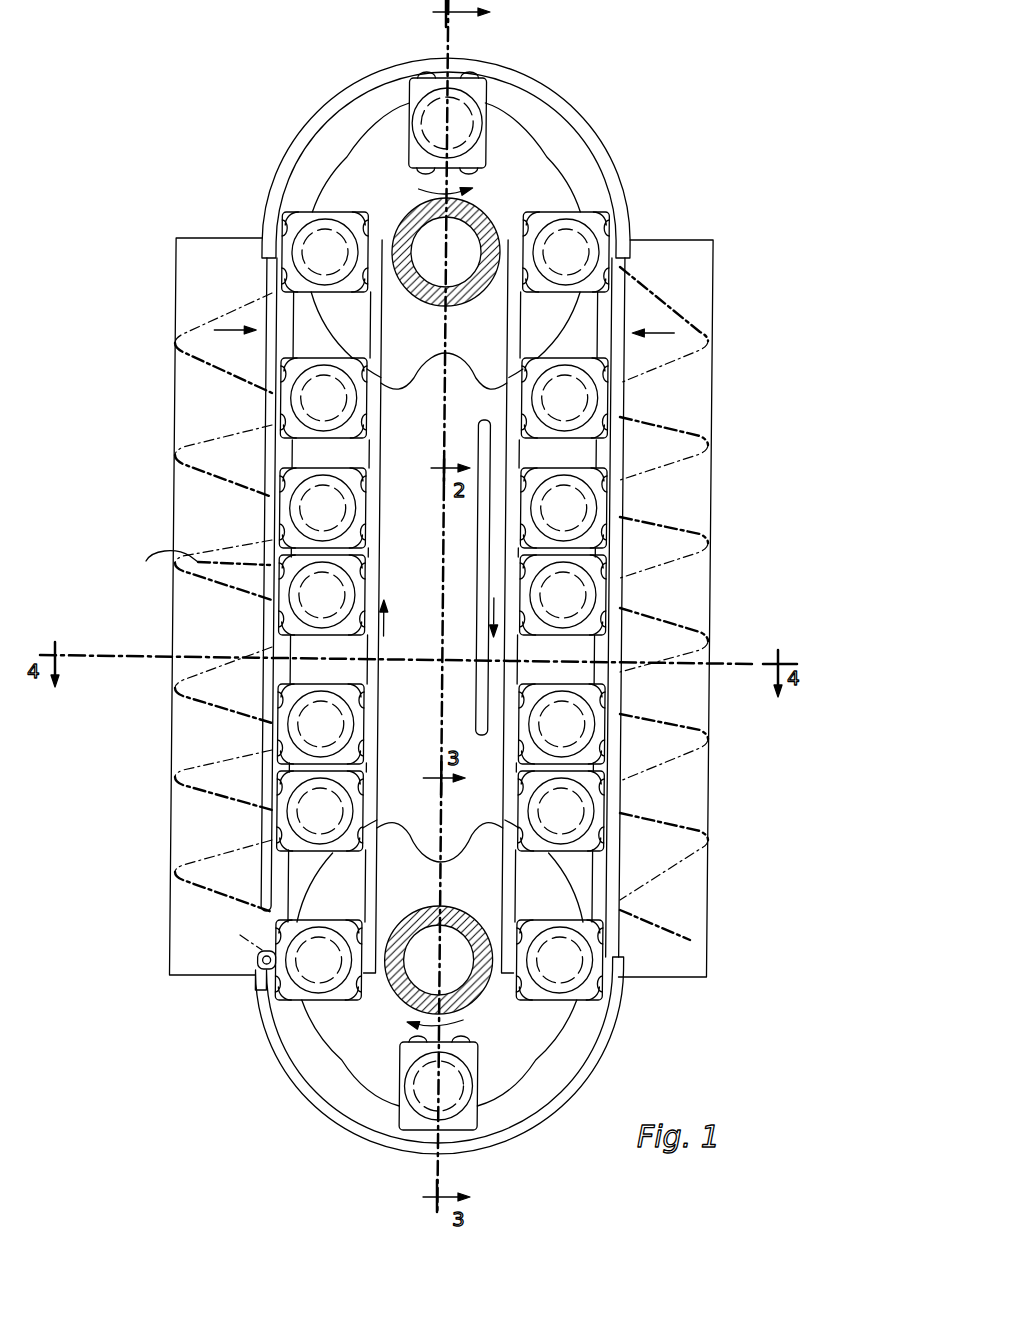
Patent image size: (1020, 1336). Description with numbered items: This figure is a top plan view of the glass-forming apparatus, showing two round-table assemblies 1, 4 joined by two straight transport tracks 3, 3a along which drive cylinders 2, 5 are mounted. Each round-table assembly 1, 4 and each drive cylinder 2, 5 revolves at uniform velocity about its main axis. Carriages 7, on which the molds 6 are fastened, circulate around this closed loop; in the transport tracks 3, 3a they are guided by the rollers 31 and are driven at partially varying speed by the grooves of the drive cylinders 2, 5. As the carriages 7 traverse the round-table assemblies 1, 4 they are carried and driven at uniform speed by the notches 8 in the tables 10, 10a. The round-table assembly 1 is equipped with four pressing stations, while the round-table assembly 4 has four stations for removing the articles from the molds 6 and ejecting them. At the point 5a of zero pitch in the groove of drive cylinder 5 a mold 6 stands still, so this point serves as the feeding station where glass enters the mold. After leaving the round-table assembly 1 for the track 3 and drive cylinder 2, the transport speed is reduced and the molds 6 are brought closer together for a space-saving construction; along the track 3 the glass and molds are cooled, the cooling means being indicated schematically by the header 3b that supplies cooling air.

The round-table assembly 1 is at (343, 79).
The drive cylinder 2 is at (686, 387).
The transport track 3 is at (624, 476).
The transport track 3a is at (373, 667).
The header 3b is at (480, 548).
The round-table assembly 4 is at (290, 1114).
The drive cylinder 5 is at (217, 622).
The point of zero pitch 5a is at (190, 564).
The mold 6 is at (318, 512).
The carriage 7 is at (300, 481).
The notch 8 is at (463, 375).
The table 10 is at (531, 148).
The table 10a is at (542, 1035).
The roller 31 is at (370, 770).